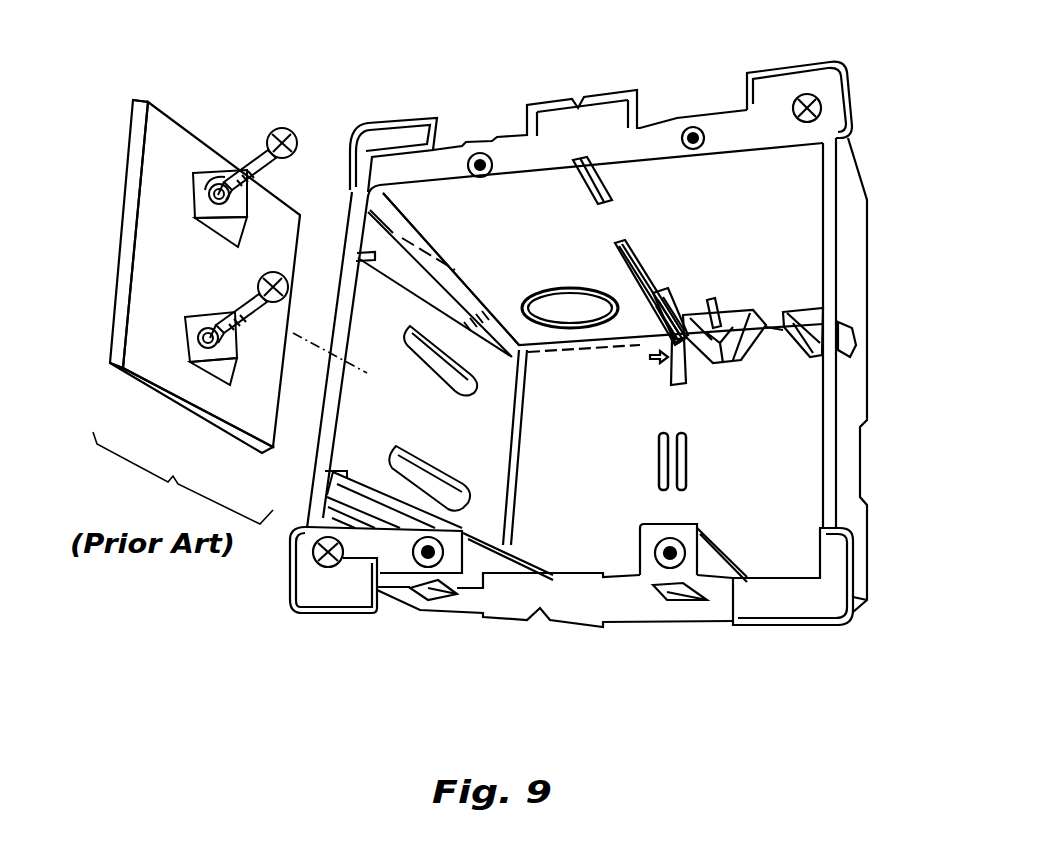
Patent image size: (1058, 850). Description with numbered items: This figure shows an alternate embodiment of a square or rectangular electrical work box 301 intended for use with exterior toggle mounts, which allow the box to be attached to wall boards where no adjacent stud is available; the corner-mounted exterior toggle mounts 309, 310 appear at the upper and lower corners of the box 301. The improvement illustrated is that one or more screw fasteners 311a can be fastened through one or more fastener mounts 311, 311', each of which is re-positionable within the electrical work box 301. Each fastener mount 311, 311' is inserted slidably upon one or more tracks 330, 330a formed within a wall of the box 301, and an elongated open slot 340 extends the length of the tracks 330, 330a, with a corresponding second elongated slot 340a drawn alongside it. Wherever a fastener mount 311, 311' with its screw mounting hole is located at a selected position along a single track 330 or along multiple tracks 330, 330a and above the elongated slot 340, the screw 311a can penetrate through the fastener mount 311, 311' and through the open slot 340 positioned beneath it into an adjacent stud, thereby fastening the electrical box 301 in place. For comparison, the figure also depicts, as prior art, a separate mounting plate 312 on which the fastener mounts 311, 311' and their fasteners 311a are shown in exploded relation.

The electrical work box 301 is at (876, 158).
The lower mounting tab 309 is at (333, 592).
The upper mounting tab 310 is at (772, 84).
The fastener mount 311 is at (207, 161).
The fastener mount 311' is at (212, 392).
The fastener 311a is at (290, 133).
The prior art mounting plate 312 is at (110, 224).
The track 330 is at (413, 273).
The track 330a is at (363, 480).
The elongated open slot 340 is at (440, 360).
The lower slot 340a is at (443, 487).